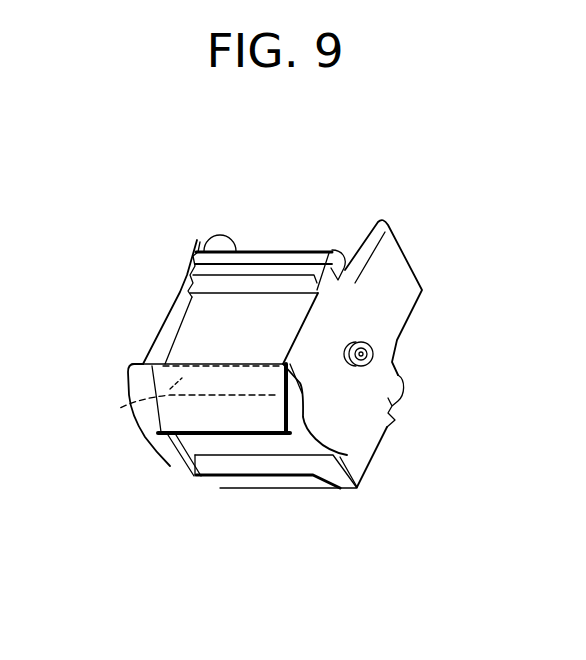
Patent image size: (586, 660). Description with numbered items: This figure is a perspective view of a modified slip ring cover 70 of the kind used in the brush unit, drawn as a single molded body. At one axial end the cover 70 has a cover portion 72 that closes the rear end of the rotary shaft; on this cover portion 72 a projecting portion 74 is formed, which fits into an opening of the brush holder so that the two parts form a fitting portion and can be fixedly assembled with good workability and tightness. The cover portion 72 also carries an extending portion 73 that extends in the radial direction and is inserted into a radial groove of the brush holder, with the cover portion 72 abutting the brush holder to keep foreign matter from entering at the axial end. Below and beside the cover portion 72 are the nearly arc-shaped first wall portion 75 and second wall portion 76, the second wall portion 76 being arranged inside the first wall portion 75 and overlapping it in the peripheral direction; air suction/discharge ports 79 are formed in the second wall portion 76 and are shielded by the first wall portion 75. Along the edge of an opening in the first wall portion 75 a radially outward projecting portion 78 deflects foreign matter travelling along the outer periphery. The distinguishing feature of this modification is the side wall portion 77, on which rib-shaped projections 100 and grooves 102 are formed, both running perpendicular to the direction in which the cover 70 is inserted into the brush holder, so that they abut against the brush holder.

The slip ring cover 70 is at (403, 415).
The cover portion 72 is at (360, 440).
The extending portion 73 is at (398, 272).
The projecting portion 74 is at (375, 345).
The first wall portion 75 is at (186, 463).
The second wall portion 76 is at (299, 448).
The side wall portion 77 is at (207, 320).
The projecting portion 78 is at (163, 457).
The suction/discharge ports 79 is at (120, 408).
The rib-shaped projections 100 is at (256, 283).
The grooves 102 is at (340, 250).